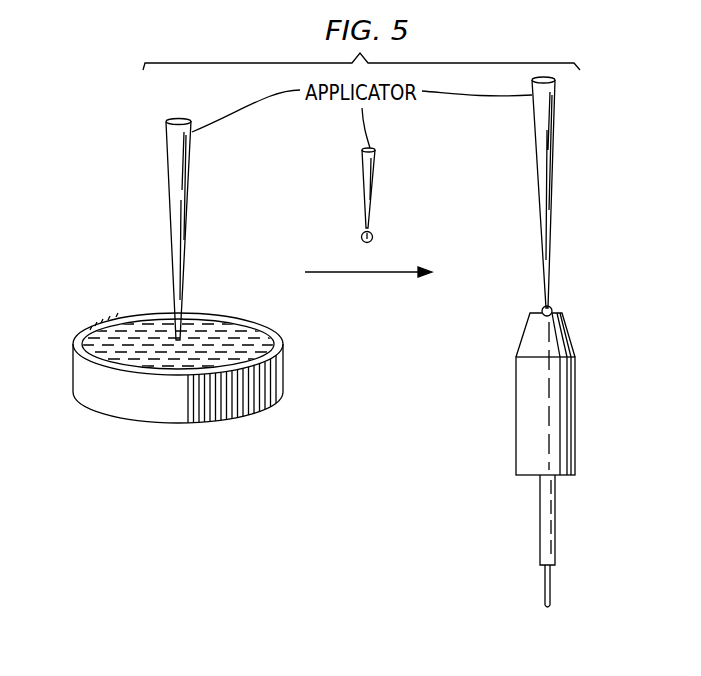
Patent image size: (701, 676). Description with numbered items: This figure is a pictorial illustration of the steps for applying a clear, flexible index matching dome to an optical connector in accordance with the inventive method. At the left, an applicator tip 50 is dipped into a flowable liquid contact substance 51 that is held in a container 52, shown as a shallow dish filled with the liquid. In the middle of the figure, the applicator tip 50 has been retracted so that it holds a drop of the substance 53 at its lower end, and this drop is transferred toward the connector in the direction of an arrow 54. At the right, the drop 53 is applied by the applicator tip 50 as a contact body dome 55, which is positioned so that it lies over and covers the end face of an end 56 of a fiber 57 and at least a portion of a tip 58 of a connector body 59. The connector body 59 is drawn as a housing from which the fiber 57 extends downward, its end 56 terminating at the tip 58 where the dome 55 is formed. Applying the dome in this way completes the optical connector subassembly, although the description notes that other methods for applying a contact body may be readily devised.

The applicator tip 50 is at (167, 139).
The flowable liquid contact substance 51 is at (119, 340).
The container 52 is at (78, 372).
The drop of the substance 53 is at (373, 239).
The arrow 54 is at (380, 274).
The contact body dome 55 is at (549, 306).
The end of fiber 56 is at (555, 318).
The fiber 57 is at (553, 594).
The tip of connector body 58 is at (533, 312).
The connector body 59 is at (571, 428).